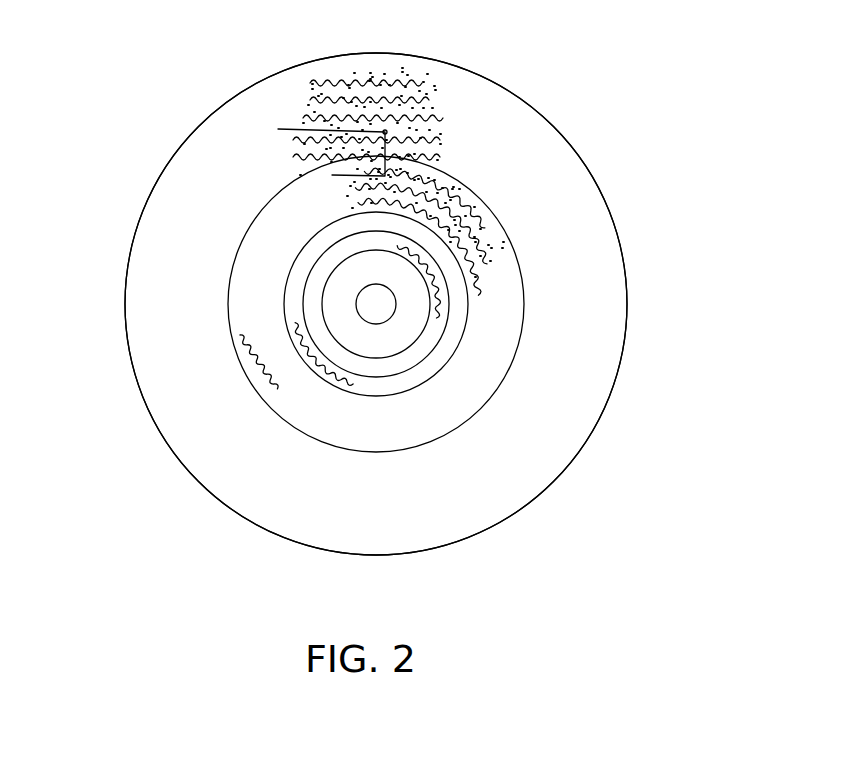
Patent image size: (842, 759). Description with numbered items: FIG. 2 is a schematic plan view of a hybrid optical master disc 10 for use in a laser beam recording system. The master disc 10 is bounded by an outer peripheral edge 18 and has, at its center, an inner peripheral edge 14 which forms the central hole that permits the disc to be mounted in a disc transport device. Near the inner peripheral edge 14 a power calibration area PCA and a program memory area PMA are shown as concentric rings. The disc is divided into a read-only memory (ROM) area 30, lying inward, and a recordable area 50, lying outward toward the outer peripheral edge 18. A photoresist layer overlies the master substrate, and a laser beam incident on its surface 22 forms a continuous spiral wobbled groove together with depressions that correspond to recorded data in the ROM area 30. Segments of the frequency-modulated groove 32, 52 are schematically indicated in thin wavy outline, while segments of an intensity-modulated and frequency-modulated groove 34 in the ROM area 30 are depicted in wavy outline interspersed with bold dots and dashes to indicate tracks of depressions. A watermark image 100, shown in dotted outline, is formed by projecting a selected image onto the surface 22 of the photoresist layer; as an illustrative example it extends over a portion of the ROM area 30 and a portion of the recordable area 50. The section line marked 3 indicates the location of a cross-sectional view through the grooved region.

The hybrid optical master disc 10 is at (665, 242).
The outer peripheral edge 18 is at (578, 152).
The surface of the photoresist layer 22 is at (607, 352).
The recordable area 50 is at (537, 454).
The read-only memory (ROM) area 30 is at (465, 408).
The inner peripheral edge 14 is at (355, 294).
The frequency-modulated groove 32 is at (250, 338).
The watermark image 100 is at (327, 73).
The frequency-modulated groove 52 is at (457, 80).
The intensity-modulated and frequency-modulated groove 34 is at (330, 177).
The section line 3- 3 is at (238, 127).
The program memory area PMA is at (370, 385).
The power calibration area PCA is at (400, 360).